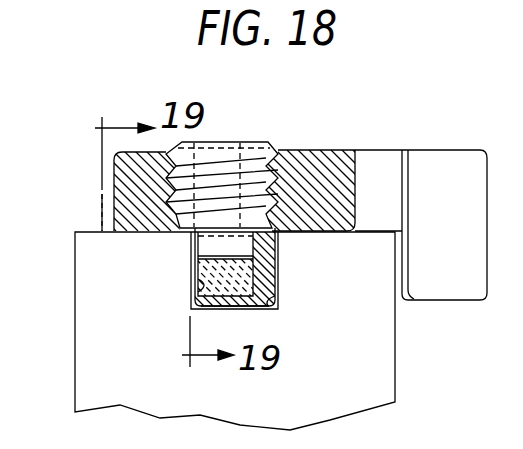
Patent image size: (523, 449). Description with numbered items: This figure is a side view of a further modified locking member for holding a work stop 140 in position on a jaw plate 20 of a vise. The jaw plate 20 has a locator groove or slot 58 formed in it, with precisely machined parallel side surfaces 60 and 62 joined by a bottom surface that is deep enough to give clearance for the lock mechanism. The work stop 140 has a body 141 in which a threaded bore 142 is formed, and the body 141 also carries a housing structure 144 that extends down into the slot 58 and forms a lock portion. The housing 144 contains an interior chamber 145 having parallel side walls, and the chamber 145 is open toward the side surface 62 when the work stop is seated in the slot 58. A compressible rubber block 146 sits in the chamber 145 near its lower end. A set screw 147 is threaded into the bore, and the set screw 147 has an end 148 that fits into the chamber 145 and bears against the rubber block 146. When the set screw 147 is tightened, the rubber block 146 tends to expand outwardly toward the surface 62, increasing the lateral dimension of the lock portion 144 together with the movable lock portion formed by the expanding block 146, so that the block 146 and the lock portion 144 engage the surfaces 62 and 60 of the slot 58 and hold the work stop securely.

The jaw plate 20 is at (373, 365).
The locator groove or slot 58 is at (253, 308).
The side surface of the slot 60 is at (258, 308).
The side surface of the slot 62 is at (192, 306).
The work stop 140 is at (365, 166).
The body of the work stop 141 is at (309, 173).
The threaded bore 142 is at (165, 192).
The housing structure 144 is at (266, 262).
The interior chamber 145 is at (255, 279).
The compressible rubber block 146 is at (197, 270).
The set screw 147 is at (213, 140).
The end of the set screw 148 is at (197, 243).